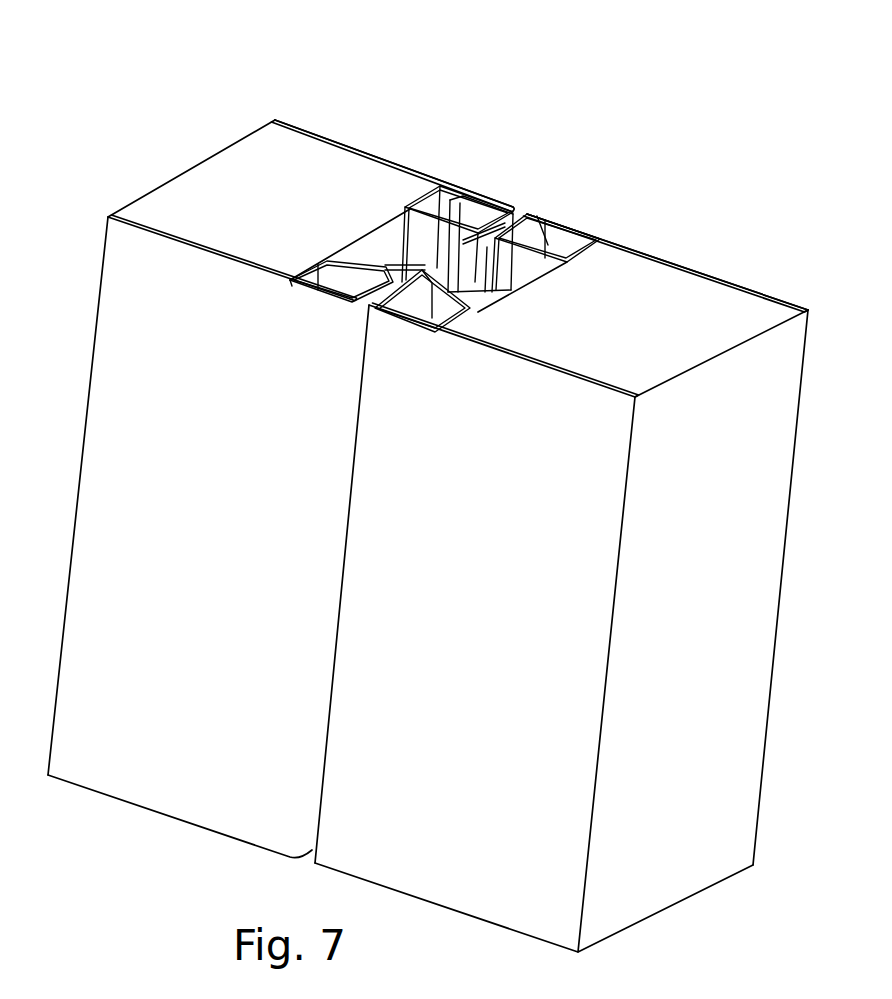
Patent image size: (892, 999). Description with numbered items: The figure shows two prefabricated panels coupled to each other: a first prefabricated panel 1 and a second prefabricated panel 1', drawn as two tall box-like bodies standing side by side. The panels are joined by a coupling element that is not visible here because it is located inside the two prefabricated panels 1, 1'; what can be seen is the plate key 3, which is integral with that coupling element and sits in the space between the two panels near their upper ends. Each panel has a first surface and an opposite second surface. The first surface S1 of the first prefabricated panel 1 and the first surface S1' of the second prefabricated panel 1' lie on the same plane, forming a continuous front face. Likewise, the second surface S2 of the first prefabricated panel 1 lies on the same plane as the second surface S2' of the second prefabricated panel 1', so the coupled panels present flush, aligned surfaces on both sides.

The first prefabricated panel 1 is at (276, 444).
The second prefabricated panel 1' is at (561, 559).
The plate key 3 is at (468, 264).
The first surface S1 is at (195, 537).
The first surface S1' is at (475, 641).
The second surface S2 is at (394, 158).
The second surface S2' is at (667, 233).